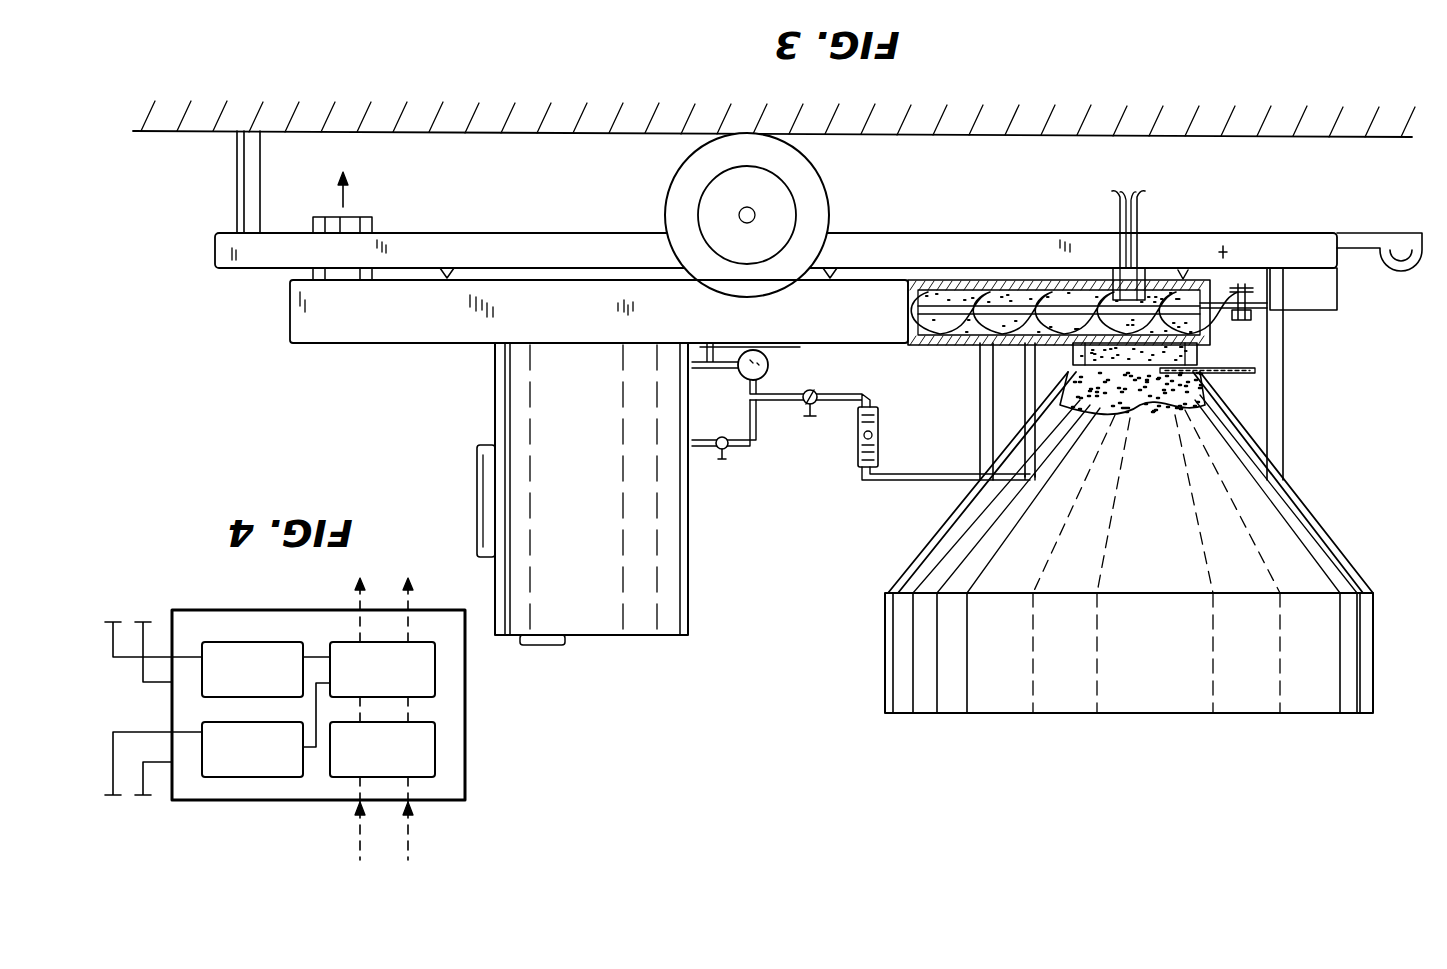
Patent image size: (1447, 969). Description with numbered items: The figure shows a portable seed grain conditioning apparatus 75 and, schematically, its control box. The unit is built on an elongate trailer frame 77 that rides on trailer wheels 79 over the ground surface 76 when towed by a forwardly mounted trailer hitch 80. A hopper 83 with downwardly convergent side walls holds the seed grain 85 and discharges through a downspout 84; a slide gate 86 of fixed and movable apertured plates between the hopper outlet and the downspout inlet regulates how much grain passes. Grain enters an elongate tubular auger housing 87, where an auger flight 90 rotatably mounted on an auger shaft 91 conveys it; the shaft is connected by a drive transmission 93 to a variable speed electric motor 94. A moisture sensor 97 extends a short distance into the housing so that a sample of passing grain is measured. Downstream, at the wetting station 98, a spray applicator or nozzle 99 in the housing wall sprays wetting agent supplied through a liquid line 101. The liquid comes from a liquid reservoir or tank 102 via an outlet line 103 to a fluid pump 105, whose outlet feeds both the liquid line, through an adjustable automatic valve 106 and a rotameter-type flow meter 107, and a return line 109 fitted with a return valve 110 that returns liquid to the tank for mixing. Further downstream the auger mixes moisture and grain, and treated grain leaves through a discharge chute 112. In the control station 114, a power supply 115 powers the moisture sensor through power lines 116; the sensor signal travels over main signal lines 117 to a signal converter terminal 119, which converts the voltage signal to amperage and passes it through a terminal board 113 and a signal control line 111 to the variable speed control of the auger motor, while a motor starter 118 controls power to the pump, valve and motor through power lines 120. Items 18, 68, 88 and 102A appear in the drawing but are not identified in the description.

In FIG. 3, the support post 18 is at (245, 185).
In FIG. 3, the fastener 68 is at (447, 266).
In FIG. 3, the seed grain conditioning apparatus 75 is at (883, 743).
In FIG. 3, the ground surface 76 is at (1290, 130).
In FIG. 3, the trailer frame 77 is at (235, 264).
In FIG. 3, the trailer wheels 79 is at (680, 200).
In FIG. 3, the trailer hitch 80 is at (1397, 258).
In FIG. 3, the hopper 83 is at (1273, 705).
In FIG. 3, the downspout 84 is at (1198, 352).
In FIG. 3, the seed grain 85 is at (1138, 403).
In FIG. 3, the slide gate 86 is at (1245, 372).
In FIG. 3, the auger housing 87 is at (415, 339).
In FIG. 3, the column 88 is at (1283, 428).
In FIG. 3, the auger flight 90 is at (1152, 266).
In FIG. 3, the auger shaft 91 is at (921, 344).
In FIG. 3, the drive transmission 93 is at (1248, 302).
In FIG. 3, the variable speed electric motor 94 is at (1318, 298).
In FIG. 3, the moisture sensor 97 is at (1140, 268).
In FIG. 3, the wetting station 98 is at (1019, 352).
In FIG. 3, the spray applicator or nozzle 99 is at (1031, 347).
In FIG. 3, the liquid line 101 is at (940, 481).
In FIG. 3, the liquid reservoir or tank 102 is at (645, 626).
In FIG. 3, the motor housing cap 102A is at (550, 646).
In FIG. 3, the outlet line 103 is at (710, 350).
In FIG. 3, the fluid pump 105 is at (758, 366).
In FIG. 3, the automatic valve 106 is at (818, 393).
In FIG. 3, the flow meter 107 is at (858, 455).
In FIG. 3, the return line 109 is at (753, 443).
In FIG. 3, the return valve 110 is at (723, 456).
In FIG. 4, the signal control line 111 is at (398, 600).
In FIG. 3, the discharge chute 112 is at (310, 268).
In FIG. 4, the terminal board 113 is at (438, 688).
In FIG. 3, the control station 114 is at (478, 492).
In FIG. 4, the control station 114 is at (186, 819).
In FIG. 4, the power supply 115 is at (248, 778).
In FIG. 4, the power lines 116 is at (112, 762).
In FIG. 3, the main signal lines 117 is at (1120, 200).
In FIG. 4, the main signal lines 117 is at (365, 840).
In FIG. 4, the motor starter 118 is at (210, 697).
In FIG. 4, the signal converter terminal 119 is at (437, 762).
In FIG. 4, the power lines 120 is at (113, 640).